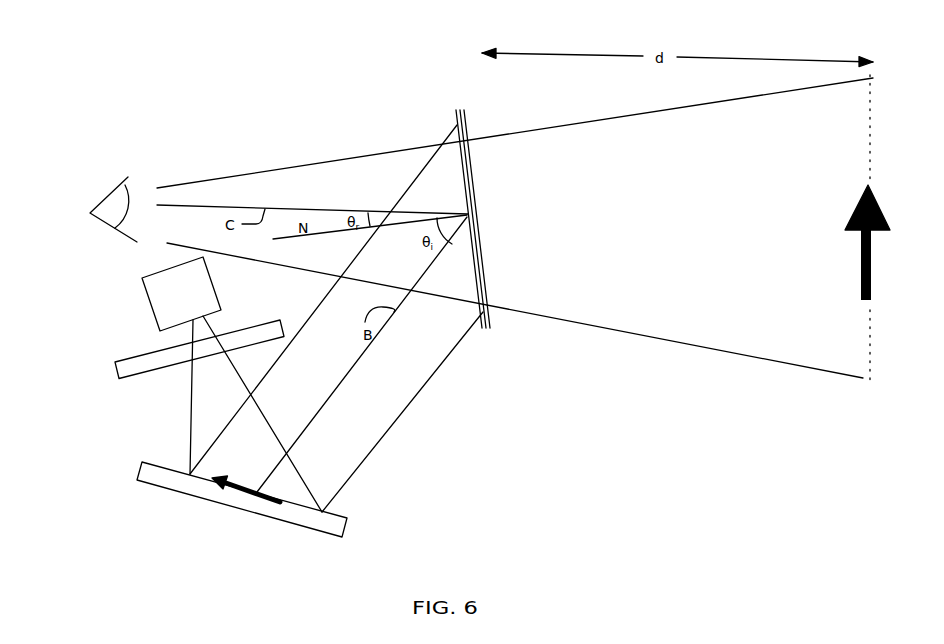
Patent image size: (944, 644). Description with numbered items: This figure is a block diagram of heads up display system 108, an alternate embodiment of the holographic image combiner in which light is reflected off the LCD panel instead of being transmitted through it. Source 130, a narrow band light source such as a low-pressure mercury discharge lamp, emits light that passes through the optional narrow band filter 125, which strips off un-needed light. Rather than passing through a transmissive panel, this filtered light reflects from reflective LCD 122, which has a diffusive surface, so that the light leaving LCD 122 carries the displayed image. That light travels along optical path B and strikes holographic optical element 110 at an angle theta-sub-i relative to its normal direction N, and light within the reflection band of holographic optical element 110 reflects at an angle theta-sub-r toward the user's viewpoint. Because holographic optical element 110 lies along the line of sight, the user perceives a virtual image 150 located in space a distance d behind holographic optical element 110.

The heads up display system 108 is at (218, 133).
The holographic optical element 110 is at (477, 240).
The reflective LCD 122 is at (350, 522).
The filter 125 is at (146, 372).
The source 130 is at (150, 300).
The virtual image 150 is at (860, 263).